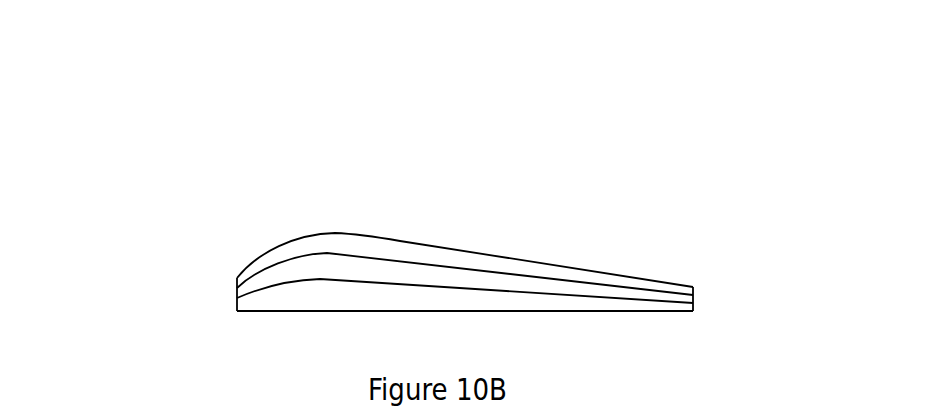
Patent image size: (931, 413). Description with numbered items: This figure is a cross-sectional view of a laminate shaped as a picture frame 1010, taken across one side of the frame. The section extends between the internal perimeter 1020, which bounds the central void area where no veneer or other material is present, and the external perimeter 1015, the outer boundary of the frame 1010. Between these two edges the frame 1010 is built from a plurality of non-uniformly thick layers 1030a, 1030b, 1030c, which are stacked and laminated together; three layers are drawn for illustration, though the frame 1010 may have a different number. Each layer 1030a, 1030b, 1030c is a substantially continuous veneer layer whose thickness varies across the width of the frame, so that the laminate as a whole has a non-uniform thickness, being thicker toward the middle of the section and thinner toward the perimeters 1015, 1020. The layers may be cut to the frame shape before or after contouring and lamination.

The picture frame 1010 is at (477, 253).
The external perimeter 1015 is at (693, 287).
The internal perimeter 1020 is at (237, 280).
The layer 1030a is at (294, 295).
The layer 1030b is at (325, 267).
The layer 1030c is at (378, 243).